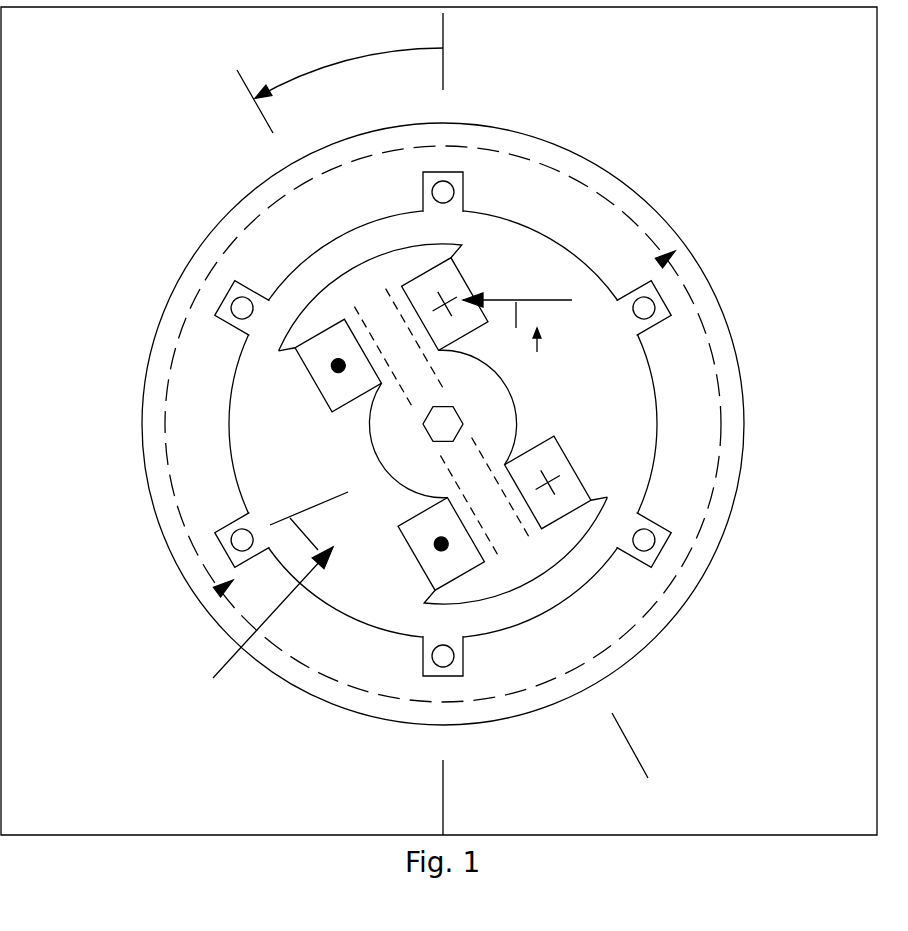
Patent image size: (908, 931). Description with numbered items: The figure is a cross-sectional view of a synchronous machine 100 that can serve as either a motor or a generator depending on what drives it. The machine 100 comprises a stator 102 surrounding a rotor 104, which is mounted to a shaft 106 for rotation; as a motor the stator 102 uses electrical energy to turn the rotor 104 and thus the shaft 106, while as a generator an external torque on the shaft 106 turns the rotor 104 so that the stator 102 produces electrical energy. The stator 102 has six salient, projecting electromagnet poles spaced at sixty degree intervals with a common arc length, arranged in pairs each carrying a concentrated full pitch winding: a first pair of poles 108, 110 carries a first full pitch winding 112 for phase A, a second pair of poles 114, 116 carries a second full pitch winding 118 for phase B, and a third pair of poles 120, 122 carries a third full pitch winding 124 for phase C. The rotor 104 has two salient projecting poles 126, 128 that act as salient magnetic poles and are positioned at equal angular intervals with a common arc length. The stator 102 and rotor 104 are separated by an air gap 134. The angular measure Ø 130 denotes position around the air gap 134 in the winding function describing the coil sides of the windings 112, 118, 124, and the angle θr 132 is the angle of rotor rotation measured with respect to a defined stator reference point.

The machine 100 is at (840, 54).
The stator 102 is at (731, 330).
The rotor 104 is at (575, 553).
The shaft 106 is at (455, 429).
The first pole 108 is at (245, 572).
The first pole 110 is at (673, 330).
The first full pitch winding 112 is at (643, 320).
The second pole 114 is at (643, 577).
The second pole 116 is at (260, 267).
The second full pitch winding 118 is at (243, 308).
The third pole 120 is at (482, 168).
The third pole 122 is at (397, 670).
The third full pitch winding 124 is at (440, 652).
The rotor pole 126 is at (400, 263).
The rotor pole 128 is at (530, 570).
The angular measure 130 is at (270, 599).
The angle of rotor rotation 132 is at (250, 103).
The air gap 134 is at (322, 287).